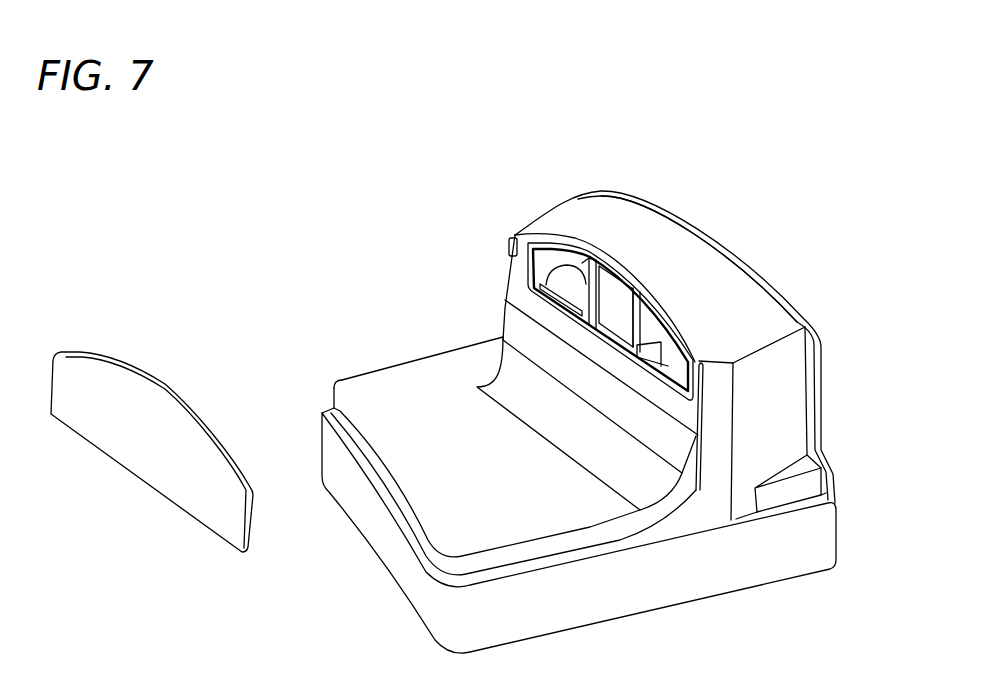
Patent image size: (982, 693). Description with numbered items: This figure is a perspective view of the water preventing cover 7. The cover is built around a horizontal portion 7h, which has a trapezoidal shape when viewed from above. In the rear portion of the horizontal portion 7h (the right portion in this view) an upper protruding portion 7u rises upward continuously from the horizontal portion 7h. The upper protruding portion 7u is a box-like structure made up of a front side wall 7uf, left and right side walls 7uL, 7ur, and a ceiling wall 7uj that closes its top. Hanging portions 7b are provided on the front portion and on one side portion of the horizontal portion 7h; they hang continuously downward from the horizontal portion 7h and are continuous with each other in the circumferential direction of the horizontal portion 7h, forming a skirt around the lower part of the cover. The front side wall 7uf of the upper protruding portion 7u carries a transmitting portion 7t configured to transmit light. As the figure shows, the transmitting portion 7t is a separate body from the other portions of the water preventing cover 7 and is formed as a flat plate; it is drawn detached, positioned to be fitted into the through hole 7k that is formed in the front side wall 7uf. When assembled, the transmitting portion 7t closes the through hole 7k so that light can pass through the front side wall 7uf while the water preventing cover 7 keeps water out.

The water preventing cover 7 is at (208, 204).
The transmitting portion 7t is at (130, 473).
The hanging portion 7b is at (365, 527).
The horizontal portion 7h is at (395, 383).
The upper protruding portion 7u is at (540, 220).
The ceiling wall 7uj is at (677, 247).
The left side wall 7uL is at (508, 263).
The through hole 7k is at (507, 287).
The front side wall 7uf is at (523, 330).
The right side wall 7ur is at (785, 402).